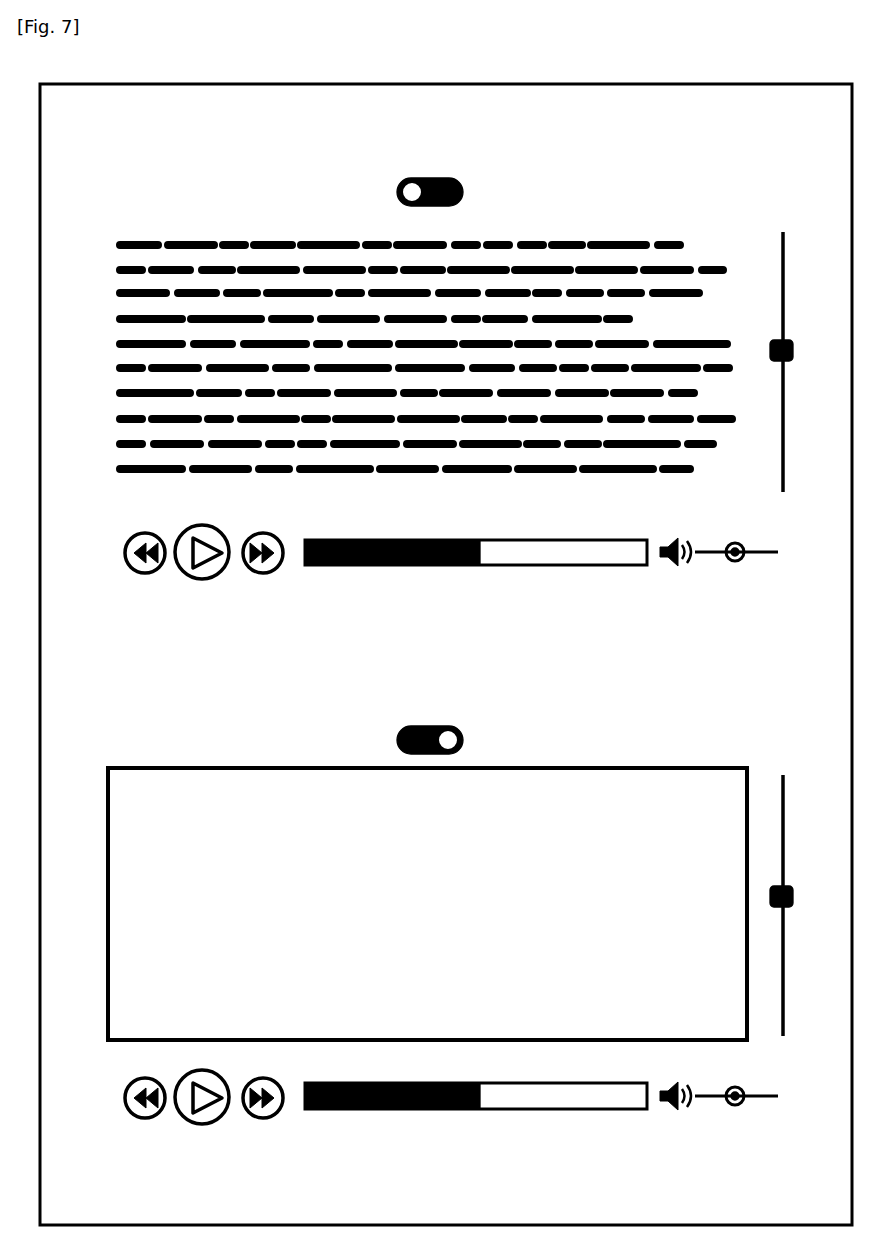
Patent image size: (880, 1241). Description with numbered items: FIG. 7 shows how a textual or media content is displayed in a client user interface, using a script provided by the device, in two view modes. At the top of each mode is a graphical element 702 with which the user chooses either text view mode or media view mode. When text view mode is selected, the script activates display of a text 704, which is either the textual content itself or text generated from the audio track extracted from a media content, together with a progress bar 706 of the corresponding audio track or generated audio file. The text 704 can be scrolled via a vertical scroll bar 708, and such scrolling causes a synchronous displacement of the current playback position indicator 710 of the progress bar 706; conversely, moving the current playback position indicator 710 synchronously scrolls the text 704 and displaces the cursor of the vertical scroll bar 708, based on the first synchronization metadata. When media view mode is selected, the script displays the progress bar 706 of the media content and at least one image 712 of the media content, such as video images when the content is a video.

The graphical element 702 is at (431, 178).
The text 704 is at (167, 241).
The progress bar 706 is at (172, 584).
The vertical scroll bar 708 is at (794, 345).
The current playback position indicator 710 is at (493, 565).
The image of the media content 712 is at (168, 782).